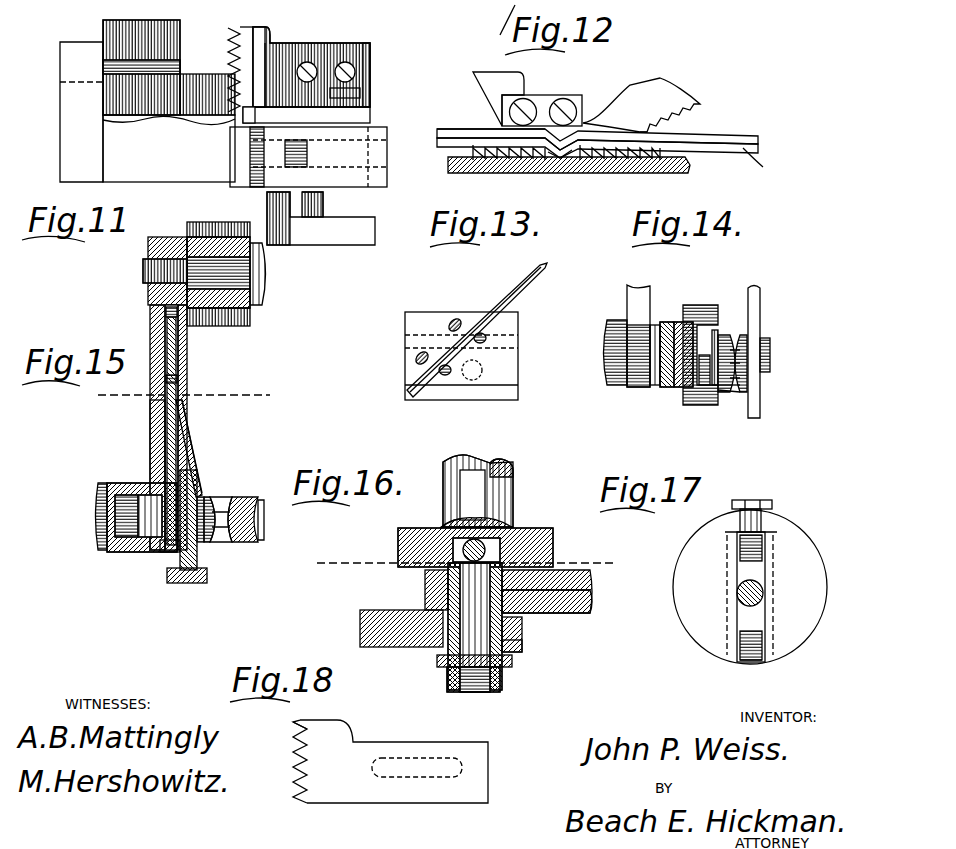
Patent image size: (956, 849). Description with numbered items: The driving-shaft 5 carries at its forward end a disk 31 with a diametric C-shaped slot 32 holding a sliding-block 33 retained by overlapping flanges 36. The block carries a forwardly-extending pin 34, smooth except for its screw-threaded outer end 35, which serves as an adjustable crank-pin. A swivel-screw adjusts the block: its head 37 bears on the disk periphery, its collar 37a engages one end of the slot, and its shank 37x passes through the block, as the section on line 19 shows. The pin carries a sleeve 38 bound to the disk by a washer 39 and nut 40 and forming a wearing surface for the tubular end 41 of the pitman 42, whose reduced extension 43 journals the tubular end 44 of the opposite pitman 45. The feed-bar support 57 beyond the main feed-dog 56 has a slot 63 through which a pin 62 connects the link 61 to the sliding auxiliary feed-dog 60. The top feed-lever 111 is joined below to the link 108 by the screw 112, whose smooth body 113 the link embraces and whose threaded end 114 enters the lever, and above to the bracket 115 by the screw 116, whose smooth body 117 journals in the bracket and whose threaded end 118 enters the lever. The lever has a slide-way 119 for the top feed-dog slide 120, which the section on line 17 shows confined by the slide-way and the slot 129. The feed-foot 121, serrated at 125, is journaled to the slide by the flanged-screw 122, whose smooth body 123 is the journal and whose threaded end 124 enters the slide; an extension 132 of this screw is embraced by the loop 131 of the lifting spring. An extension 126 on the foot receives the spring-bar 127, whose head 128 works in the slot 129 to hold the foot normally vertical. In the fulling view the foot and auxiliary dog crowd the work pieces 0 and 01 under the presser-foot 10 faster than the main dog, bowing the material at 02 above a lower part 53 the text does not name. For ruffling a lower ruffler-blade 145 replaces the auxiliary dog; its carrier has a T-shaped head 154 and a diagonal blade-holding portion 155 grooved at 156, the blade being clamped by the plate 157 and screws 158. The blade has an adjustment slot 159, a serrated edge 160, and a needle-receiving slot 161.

In FIG. 12, the piece of work 0 is at (732, 135).
In FIG. 12, the piece of work 01 is at (763, 162).
In FIG. 12, the bow in the work 02 is at (562, 162).
In FIG. 16, the driving-shaft 5 is at (514, 478).
In FIG. 12, the presser-foot 10 is at (478, 88).
In FIG. 15, the section line 17 is at (185, 395).
In FIG. 16, the section line 19 is at (471, 566).
In FIG. 16, the disk 31 is at (555, 545).
In FIG. 17, the disk 31 is at (815, 570).
In FIG. 17, the C-shaped slot 32 is at (760, 655).
In FIG. 16, the sliding-block 33 is at (452, 548).
In FIG. 17, the sliding-block 33 is at (755, 620).
In FIG. 16, the pin 34 is at (475, 690).
In FIG. 17, the pin 34 is at (737, 591).
In FIG. 16, the screw-threaded end 35 is at (502, 682).
In FIG. 16, the overlapping flanges 36 is at (510, 530).
In FIG. 17, the overlapping flanges 36 is at (765, 550).
In FIG. 17, the head of swivel-screw 37 is at (775, 502).
In FIG. 17, the collar 37a is at (725, 533).
In FIG. 16, the shank 37x is at (442, 528).
In FIG. 17, the shank 37x is at (745, 648).
In FIG. 16, the sleeve 38 is at (592, 592).
In FIG. 16, the washer 39 is at (513, 664).
In FIG. 16, the nut 40 is at (500, 694).
In FIG. 16, the tubular end 41 is at (425, 590).
In FIG. 16, the pitman 42 is at (585, 612).
In FIG. 16, the reduced extension 43 is at (523, 628).
In FIG. 16, the tubular end 44 is at (523, 650).
In FIG. 16, the pitman 45 is at (360, 632).
In FIG. 12, the base plate 53 is at (690, 172).
In FIG. 12, the main feed-dog 56 is at (514, 158).
In FIG. 11, the support 57 is at (387, 182).
In FIG. 12, the support 57 is at (500, 28).
In FIG. 12, the auxiliary feed-dog 60 is at (630, 160).
In FIG. 11, the link 61 is at (342, 240).
In FIG. 11, the pin or screw 62 is at (310, 172).
In FIG. 12, the slot 63 is at (545, 48).
In FIG. 14, the link 108 is at (630, 292).
In FIG. 15, the link 108 is at (122, 482).
In FIG. 14, the top feed-lever 111 is at (676, 325).
In FIG. 15, the top feed-lever 111 is at (150, 428).
In FIG. 14, the screw 112 is at (609, 326).
In FIG. 15, the screw 112 is at (95, 504).
In FIG. 15, the smooth body 113 is at (107, 540).
In FIG. 15, the threaded end 114 is at (140, 552).
In FIG. 15, the bracket 115 is at (252, 320).
In FIG. 15, the screw 116 is at (252, 292).
In FIG. 11, the smooth body 117 is at (292, 238).
In FIG. 15, the smooth body 117 is at (240, 262).
In FIG. 15, the screw-threaded end 118 is at (143, 270).
In FIG. 14, the slide-way 119 is at (663, 388).
In FIG. 15, the slide-way 119 is at (152, 322).
In FIG. 14, the top feed-dog slide 120 is at (678, 390).
In FIG. 15, the top feed-dog slide 120 is at (178, 358).
In FIG. 12, the top feed-foot 121 is at (673, 90).
In FIG. 14, the top feed-foot 121 is at (705, 392).
In FIG. 15, the top feed-foot 121 is at (200, 565).
In FIG. 14, the flanged-screw 122 is at (733, 340).
In FIG. 15, the flanged-screw 122 is at (220, 497).
In FIG. 15, the smooth body 123 is at (205, 548).
In FIG. 15, the screw-threaded end 124 is at (165, 552).
In FIG. 12, the serrations 125 is at (690, 125).
In FIG. 15, the serrations 125 is at (190, 583).
In FIG. 14, the extension 126 is at (722, 395).
In FIG. 15, the extension 126 is at (199, 470).
In FIG. 14, the spring-bar 127 is at (747, 384).
In FIG. 15, the spring-bar 127 is at (189, 430).
In FIG. 14, the head 128 is at (702, 372).
In FIG. 15, the head 128 is at (178, 380).
In FIG. 15, the slot 129 is at (180, 340).
In FIG. 14, the elongated loop 131 is at (762, 396).
In FIG. 15, the elongated loop 131 is at (247, 500).
In FIG. 14, the extension 132 is at (765, 340).
In FIG. 15, the extension 132 is at (264, 540).
In FIG. 11, the lower ruffler-blade 145 is at (370, 75).
In FIG. 13, the lower ruffler-blade 145 is at (512, 292).
In FIG. 18, the lower ruffler-blade 145 is at (368, 800).
In FIG. 11, the T-shaped head 154 is at (360, 116).
In FIG. 13, the T-shaped head 154 is at (520, 394).
In FIG. 11, the blade-holding portion 155 is at (316, 44).
In FIG. 13, the blade-holding portion 155 is at (520, 371).
In FIG. 13, the groove 156 is at (458, 360).
In FIG. 11, the clamping-plate 157 is at (345, 95).
In FIG. 13, the clamping-plate 157 is at (435, 340).
In FIG. 11, the screws 158 is at (350, 64).
In FIG. 13, the screws 158 is at (410, 356).
In FIG. 18, the elongated slot 159 is at (445, 768).
In FIG. 11, the serrated edge 160 is at (228, 34).
In FIG. 18, the serrated edge 160 is at (292, 748).
In FIG. 11, the needle-receiving slot 161 is at (228, 60).
In FIG. 18, the needle-receiving slot 161 is at (292, 768).